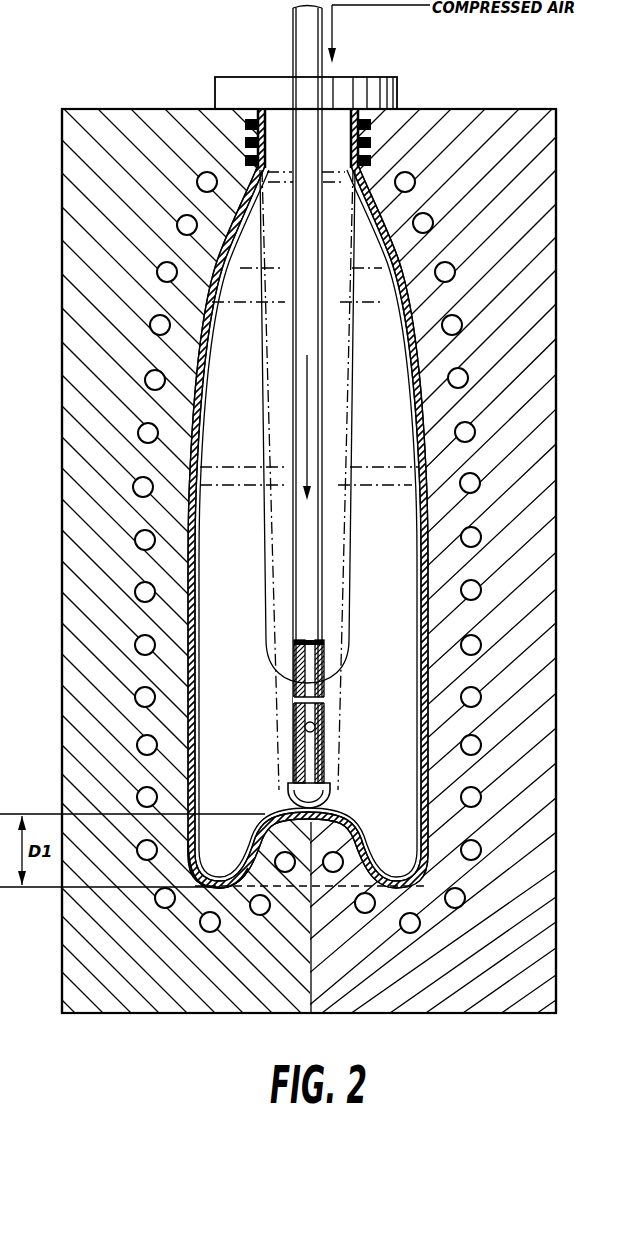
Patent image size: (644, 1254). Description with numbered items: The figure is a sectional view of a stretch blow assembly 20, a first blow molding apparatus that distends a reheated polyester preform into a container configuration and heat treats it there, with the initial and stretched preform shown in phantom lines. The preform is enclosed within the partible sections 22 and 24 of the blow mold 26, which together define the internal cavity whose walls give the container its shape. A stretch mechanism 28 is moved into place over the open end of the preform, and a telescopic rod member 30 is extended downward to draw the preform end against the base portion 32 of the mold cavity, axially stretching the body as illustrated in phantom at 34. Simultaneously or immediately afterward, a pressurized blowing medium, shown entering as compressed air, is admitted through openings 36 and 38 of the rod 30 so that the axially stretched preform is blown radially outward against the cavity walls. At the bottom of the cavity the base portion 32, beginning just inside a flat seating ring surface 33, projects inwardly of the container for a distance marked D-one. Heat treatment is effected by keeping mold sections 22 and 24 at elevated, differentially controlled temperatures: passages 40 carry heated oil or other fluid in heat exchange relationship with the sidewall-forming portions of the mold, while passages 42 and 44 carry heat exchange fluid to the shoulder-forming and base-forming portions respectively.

The stretch blow assembly 20 is at (165, 88).
The partible mold section 22 is at (92, 118).
The partible mold section 24 is at (546, 210).
The blow mold 26 is at (494, 104).
The stretch mechanism 28 is at (378, 96).
The telescopic rod member 30 is at (312, 568).
The base portion 32 is at (340, 816).
The flat seating ring surface 33 is at (228, 872).
The axially stretched preform 34 is at (323, 643).
The opening of rod 36 is at (323, 700).
The opening of rod 38 is at (322, 743).
The passages 40 is at (128, 446).
The passages 42 is at (452, 262).
The passages 44 is at (298, 889).